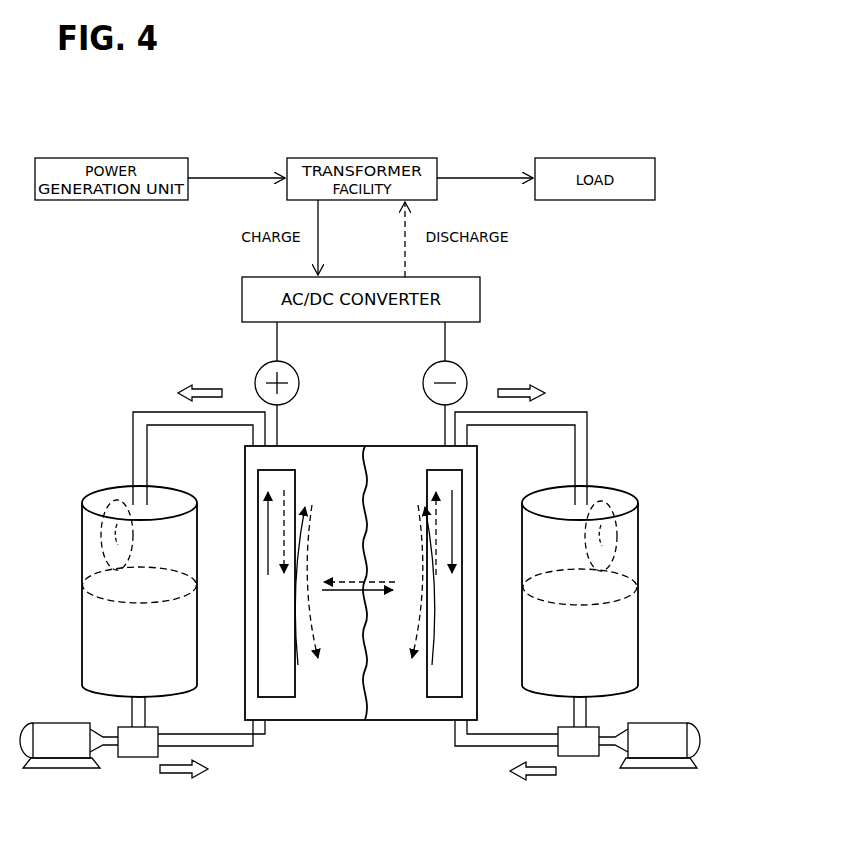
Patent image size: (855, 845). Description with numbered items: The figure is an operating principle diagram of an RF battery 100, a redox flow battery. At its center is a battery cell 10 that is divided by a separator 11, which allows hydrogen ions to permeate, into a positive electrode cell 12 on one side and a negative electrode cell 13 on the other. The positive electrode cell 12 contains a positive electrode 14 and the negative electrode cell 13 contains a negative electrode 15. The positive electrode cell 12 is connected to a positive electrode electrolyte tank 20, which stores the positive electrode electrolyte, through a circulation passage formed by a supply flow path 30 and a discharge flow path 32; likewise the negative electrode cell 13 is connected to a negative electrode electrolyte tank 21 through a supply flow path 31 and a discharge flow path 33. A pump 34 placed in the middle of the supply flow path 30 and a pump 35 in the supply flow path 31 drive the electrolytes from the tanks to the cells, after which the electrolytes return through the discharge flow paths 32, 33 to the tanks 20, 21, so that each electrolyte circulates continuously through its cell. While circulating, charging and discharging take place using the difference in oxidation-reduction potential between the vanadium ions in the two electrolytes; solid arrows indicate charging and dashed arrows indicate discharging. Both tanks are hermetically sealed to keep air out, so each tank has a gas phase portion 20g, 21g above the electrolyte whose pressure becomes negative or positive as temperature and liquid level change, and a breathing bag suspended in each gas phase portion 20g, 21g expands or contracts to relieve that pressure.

The RF battery 100 is at (626, 334).
The battery cell 10 is at (363, 431).
The separator 11 is at (363, 722).
The positive electrode cell 12 is at (302, 722).
The negative electrode cell 13 is at (416, 722).
The positive electrode 14 is at (256, 688).
The negative electrode 15 is at (464, 688).
The positive electrode electrolyte tank 20 is at (88, 531).
The negative electrode electrolyte tank 21 is at (632, 531).
The gas phase portion 20g is at (183, 547).
The gas phase portion 21g is at (537, 547).
The supply flow path 30 is at (226, 747).
The supply flow path 31 is at (491, 747).
The discharge flow path 32 is at (145, 410).
The discharge flow path 33 is at (573, 410).
The pump 34 is at (43, 723).
The pump 35 is at (676, 723).